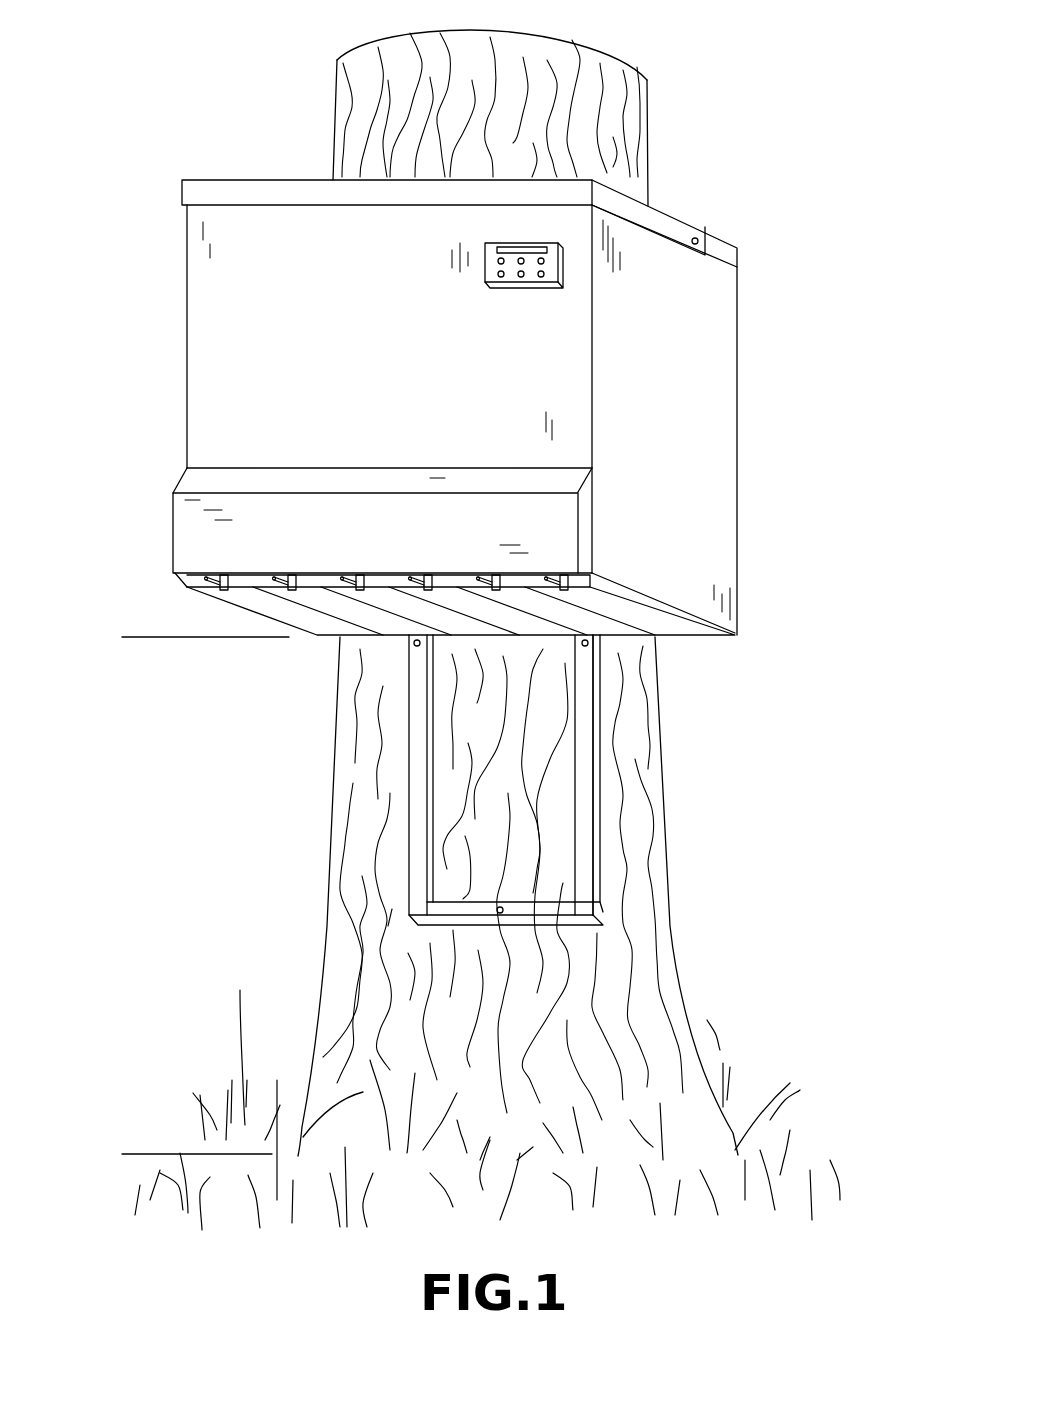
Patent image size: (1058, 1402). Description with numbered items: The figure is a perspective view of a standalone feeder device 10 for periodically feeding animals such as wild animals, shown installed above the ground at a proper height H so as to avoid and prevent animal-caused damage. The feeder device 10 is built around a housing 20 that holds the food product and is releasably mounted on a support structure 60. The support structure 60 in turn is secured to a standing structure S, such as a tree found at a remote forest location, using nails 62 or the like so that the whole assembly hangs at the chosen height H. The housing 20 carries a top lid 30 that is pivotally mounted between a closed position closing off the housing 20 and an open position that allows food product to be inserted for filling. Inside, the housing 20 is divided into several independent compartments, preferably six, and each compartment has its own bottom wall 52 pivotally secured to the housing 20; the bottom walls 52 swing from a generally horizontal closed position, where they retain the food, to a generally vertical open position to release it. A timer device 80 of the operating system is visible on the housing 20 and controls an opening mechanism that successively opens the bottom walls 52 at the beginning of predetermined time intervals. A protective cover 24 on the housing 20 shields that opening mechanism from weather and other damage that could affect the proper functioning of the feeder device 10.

The feeder device 10 is at (818, 283).
The housing 20 is at (722, 430).
The protective cover 24 is at (203, 545).
The top lid 30 is at (663, 218).
The bottom wall 52 is at (655, 618).
The support structure 60 is at (413, 763).
The nails 62 is at (503, 908).
The timer device 80 is at (552, 268).
The standing structure S is at (337, 120).
The height H is at (132, 637).